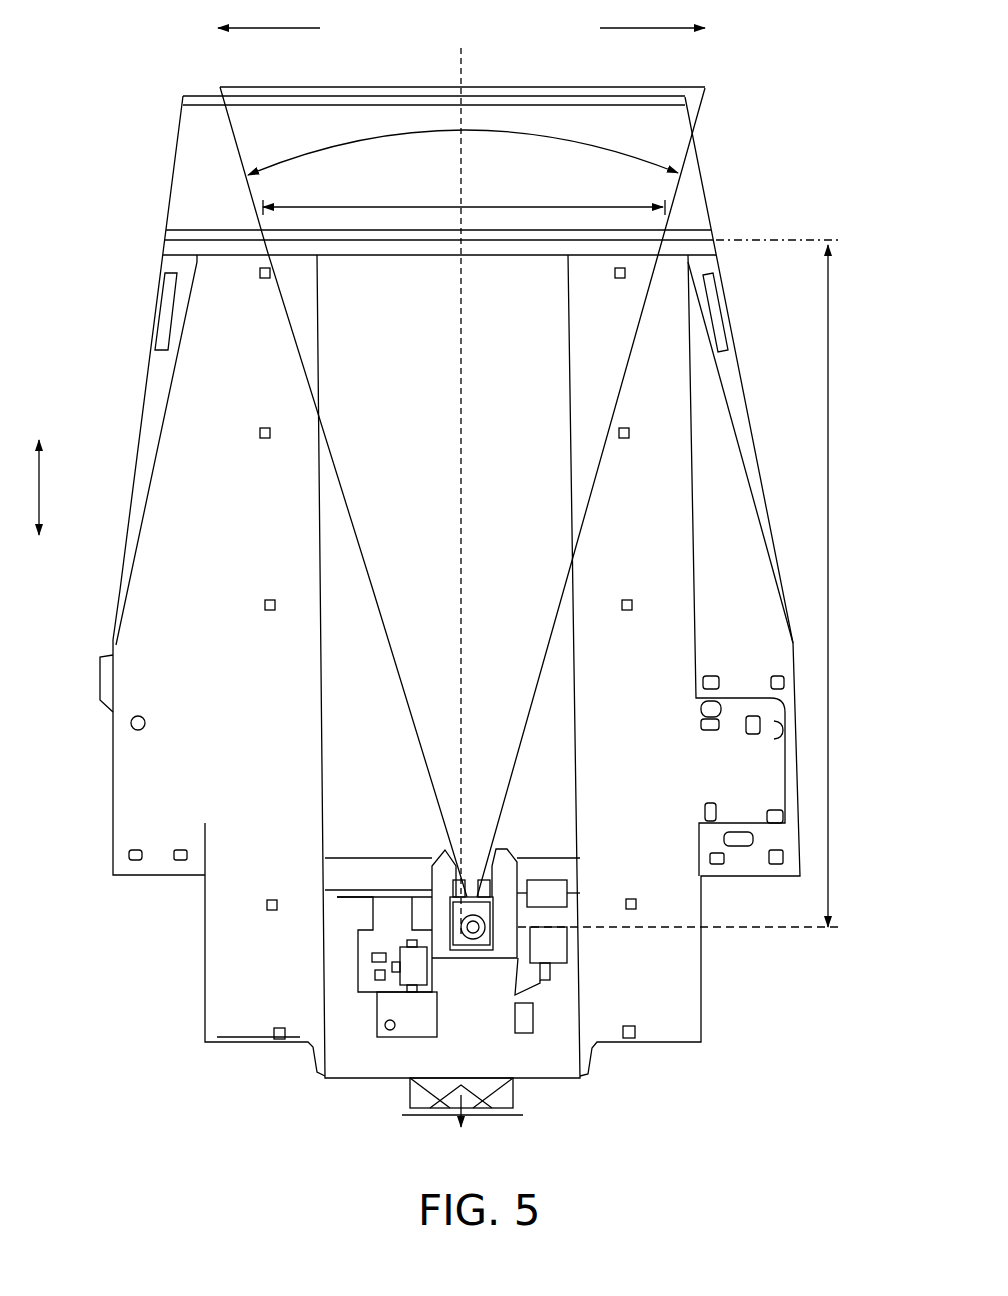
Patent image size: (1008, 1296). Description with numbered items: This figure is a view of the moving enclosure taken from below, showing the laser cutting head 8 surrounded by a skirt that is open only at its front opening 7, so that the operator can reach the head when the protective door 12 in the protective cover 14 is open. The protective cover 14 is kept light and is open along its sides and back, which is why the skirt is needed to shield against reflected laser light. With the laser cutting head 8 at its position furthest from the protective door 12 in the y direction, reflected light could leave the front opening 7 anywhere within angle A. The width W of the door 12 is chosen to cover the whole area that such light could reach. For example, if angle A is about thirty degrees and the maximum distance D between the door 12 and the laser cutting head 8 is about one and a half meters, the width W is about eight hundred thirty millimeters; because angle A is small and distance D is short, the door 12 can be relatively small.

The protective door 12 is at (206, 96).
The protective cover 14 is at (198, 192).
The front opening 7 is at (465, 843).
The laser cutting head 8 is at (473, 927).
The angle A is at (548, 133).
The width of door W is at (485, 207).
The maximum distance D is at (830, 588).